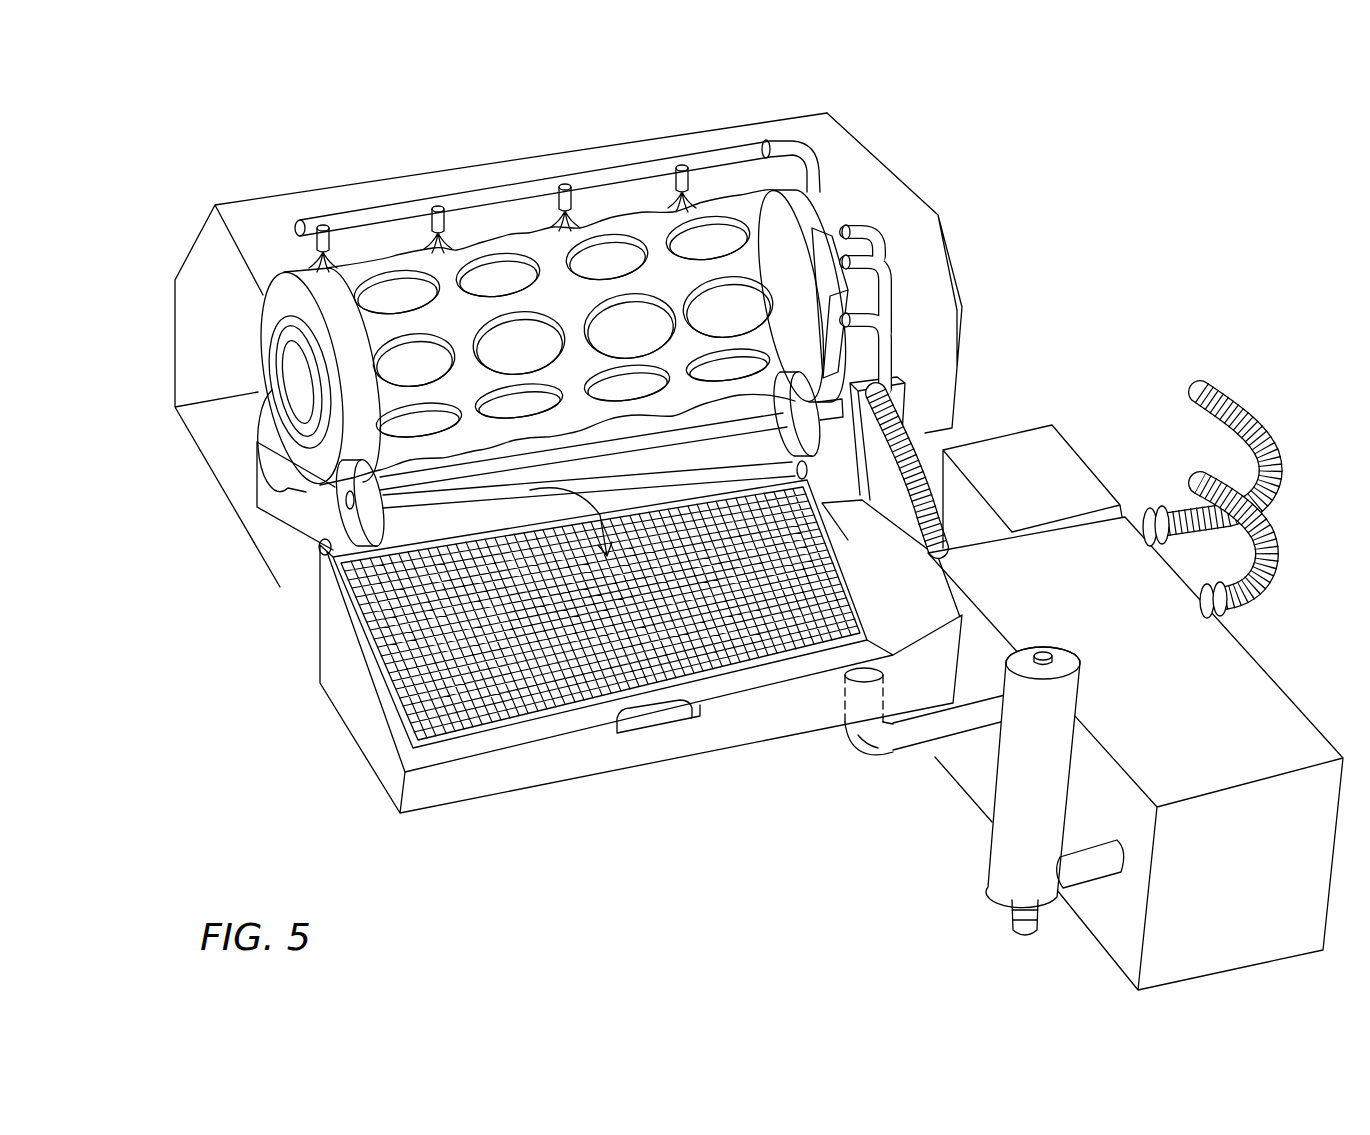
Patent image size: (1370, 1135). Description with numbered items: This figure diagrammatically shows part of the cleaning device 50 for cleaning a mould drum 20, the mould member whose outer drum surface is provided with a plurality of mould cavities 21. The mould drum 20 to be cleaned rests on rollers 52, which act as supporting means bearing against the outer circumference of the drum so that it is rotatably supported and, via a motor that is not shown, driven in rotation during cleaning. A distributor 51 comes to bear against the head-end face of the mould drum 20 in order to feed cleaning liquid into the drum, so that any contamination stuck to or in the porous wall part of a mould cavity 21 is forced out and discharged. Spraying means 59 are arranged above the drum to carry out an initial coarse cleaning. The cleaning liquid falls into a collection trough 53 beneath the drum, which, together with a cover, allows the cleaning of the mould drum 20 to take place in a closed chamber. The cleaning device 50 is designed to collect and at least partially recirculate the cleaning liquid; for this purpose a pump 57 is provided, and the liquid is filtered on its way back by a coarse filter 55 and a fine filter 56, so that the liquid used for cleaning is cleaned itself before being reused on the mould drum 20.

The mould drum 20 is at (231, 319).
The mould cavities 21 is at (693, 240).
The cleaning device 50 is at (988, 255).
The distributor 51 is at (810, 220).
The rollers 52 is at (795, 415).
The collection trough 53 is at (280, 517).
The coarse filter 55 is at (570, 660).
The fine filter 56 is at (1020, 837).
The pump 57 is at (1220, 680).
The spraying means 59 is at (373, 217).